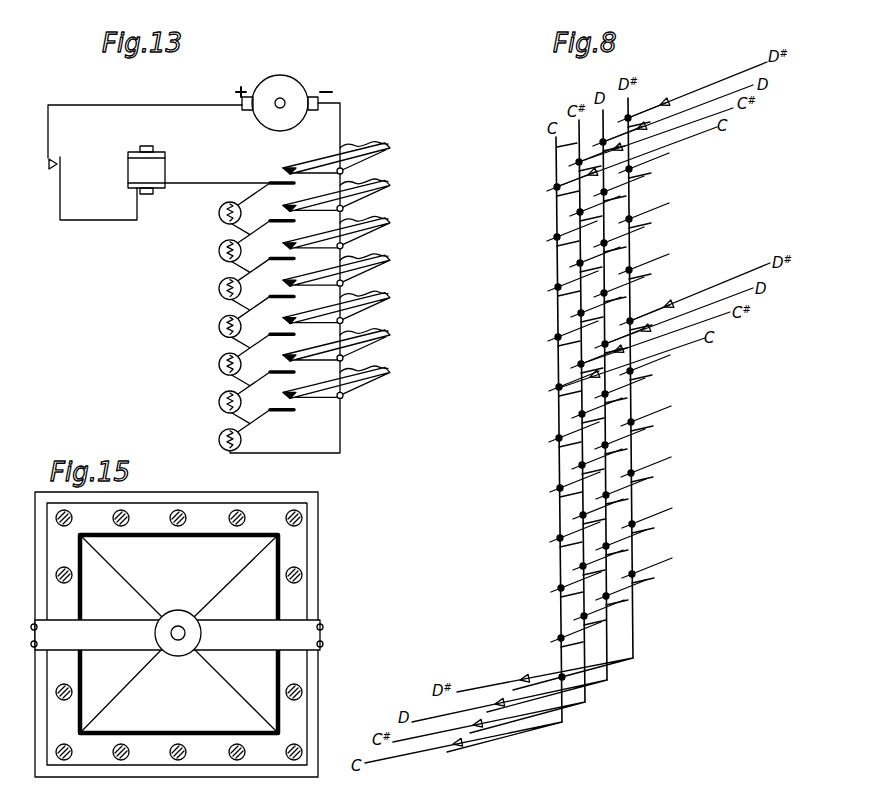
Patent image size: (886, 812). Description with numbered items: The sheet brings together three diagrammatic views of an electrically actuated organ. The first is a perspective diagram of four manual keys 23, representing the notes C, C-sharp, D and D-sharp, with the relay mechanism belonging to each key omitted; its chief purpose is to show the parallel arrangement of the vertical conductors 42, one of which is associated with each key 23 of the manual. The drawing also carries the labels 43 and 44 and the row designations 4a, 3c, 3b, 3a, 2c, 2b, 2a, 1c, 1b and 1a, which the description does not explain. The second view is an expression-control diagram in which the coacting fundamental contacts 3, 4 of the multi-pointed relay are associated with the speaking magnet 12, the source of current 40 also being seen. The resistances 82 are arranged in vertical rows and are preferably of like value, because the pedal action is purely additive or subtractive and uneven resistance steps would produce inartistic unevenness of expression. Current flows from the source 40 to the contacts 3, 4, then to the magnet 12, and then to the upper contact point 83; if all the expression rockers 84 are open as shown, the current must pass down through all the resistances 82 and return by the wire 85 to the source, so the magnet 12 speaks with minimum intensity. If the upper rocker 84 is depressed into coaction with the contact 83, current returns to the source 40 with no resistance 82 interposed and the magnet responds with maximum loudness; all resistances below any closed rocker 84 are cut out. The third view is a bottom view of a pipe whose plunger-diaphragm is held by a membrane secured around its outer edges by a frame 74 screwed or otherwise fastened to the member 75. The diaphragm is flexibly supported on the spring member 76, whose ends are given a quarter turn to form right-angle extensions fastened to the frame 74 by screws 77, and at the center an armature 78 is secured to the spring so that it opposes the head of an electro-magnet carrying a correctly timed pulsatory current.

In FIG. 13, the fundamental contact 3 is at (48, 163).
In FIG. 13, the fundamental contact 4 is at (61, 164).
In FIG. 13, the speaking magnet 12 is at (166, 157).
In FIG. 13, the source of current 40 is at (292, 88).
In FIG. 13, the resistances 82 is at (219, 213).
In FIG. 13, the upper contact point 83 is at (280, 181).
In FIG. 13, the expression rockers 84 is at (357, 146).
In FIG. 13, the wire 85 is at (343, 118).
In FIG. 15, the frame 74 is at (319, 567).
In FIG. 15, the member 75 is at (300, 662).
In FIG. 15, the spring member 76 is at (233, 623).
In FIG. 15, the screws 77 is at (32, 624).
In FIG. 15, the armature 78 is at (178, 642).
In FIG. 8, the manual keys 23 is at (419, 764).
In FIG. 8, the vertical conductors 42 is at (557, 148).
In FIG. 8, the spring contact 43 is at (558, 293).
In FIG. 8, the connector arrow 44 is at (646, 333).
In FIG. 8, the key contact row 4a is at (554, 187).
In FIG. 8, the key contact row 3c is at (554, 237).
In FIG. 8, the key contact row 3b is at (555, 287).
In FIG. 8, the key contact row 3a is at (555, 337).
In FIG. 8, the key contact row 2c is at (556, 387).
In FIG. 8, the key contact row 2b is at (556, 438).
In FIG. 8, the key contact row 2a is at (557, 488).
In FIG. 8, the key contact row 1c is at (557, 538).
In FIG. 8, the key contact row 1b is at (558, 588).
In FIG. 8, the key contact row 1a is at (559, 640).